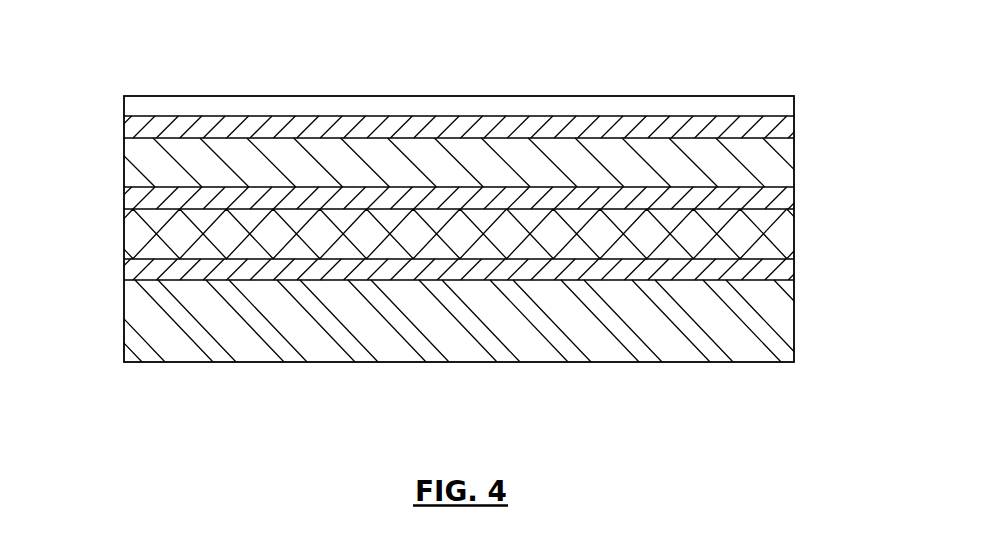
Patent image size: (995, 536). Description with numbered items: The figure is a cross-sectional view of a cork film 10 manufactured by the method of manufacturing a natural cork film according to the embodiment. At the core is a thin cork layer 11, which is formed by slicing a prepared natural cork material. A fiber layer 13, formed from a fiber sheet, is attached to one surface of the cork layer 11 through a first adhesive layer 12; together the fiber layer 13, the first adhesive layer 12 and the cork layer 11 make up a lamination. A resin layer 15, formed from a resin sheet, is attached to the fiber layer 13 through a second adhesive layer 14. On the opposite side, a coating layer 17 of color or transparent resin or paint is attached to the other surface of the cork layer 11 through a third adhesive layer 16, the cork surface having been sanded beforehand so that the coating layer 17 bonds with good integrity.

The cork film 10 is at (743, 57).
The cork layer 11 is at (780, 163).
The first adhesive layer 12 is at (133, 201).
The fiber layer 13 is at (778, 233).
The second adhesive layer 14 is at (133, 274).
The resin layer 15 is at (778, 322).
The third adhesive layer 16 is at (133, 128).
The coating layer 17 is at (780, 107).